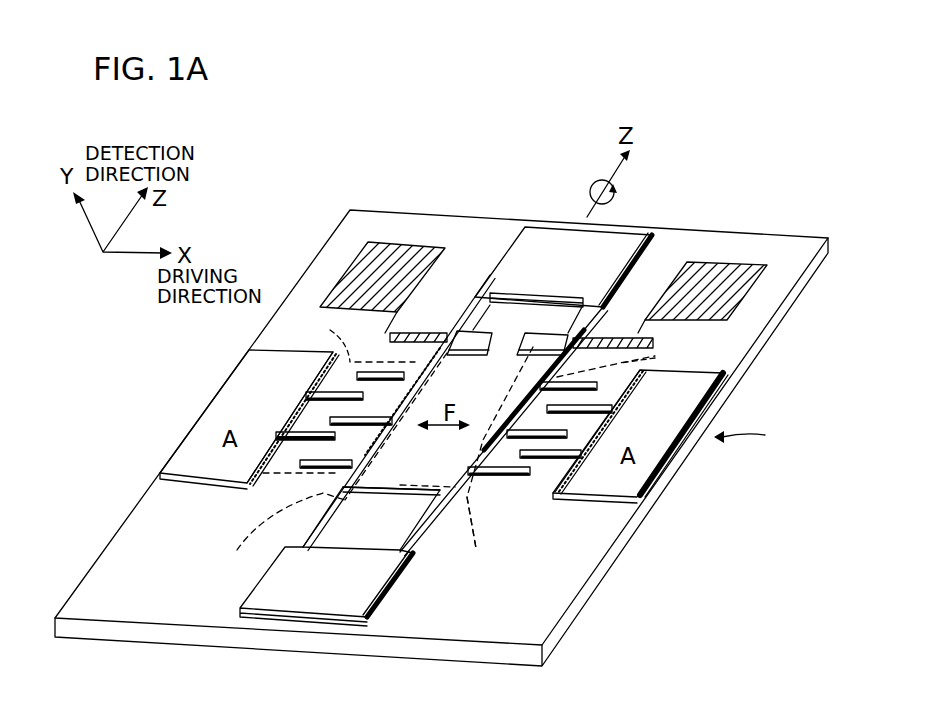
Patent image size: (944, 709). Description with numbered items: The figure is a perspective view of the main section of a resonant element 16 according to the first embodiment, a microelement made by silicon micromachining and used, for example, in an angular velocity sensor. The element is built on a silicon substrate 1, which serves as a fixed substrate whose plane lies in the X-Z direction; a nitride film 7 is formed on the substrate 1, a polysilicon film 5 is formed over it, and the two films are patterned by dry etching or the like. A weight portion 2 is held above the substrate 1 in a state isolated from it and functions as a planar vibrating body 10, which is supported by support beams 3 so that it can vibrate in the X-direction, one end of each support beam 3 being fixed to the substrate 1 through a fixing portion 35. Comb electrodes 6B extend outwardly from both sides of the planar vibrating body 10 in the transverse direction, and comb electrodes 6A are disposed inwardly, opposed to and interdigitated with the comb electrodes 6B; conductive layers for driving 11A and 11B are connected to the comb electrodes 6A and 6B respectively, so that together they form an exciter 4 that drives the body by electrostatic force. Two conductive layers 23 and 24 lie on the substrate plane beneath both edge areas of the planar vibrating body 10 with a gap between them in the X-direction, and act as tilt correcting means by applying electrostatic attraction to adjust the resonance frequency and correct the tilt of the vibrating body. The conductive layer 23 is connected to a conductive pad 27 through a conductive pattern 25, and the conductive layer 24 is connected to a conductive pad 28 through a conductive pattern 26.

The silicon substrate 1 is at (730, 243).
The weight portion 2 is at (487, 380).
The support beams 3 is at (467, 312).
The exciter 4 is at (493, 345).
The polysilicon film 5 is at (652, 235).
The comb electrodes 6A is at (320, 363).
The comb electrodes 6B is at (315, 470).
The nitride film 7 is at (633, 262).
The planar vibrating body 10 is at (400, 485).
The conductive layer for driving 11A is at (300, 392).
The conductive layer for driving 11B is at (410, 358).
The resonant element 16 is at (760, 440).
The conductive layer 23 is at (280, 533).
The conductive layer 24 is at (487, 536).
The conductive pattern 25 is at (483, 288).
The conductive pattern 26 is at (535, 332).
The conductive pad 27 is at (390, 260).
The conductive pad 28 is at (755, 265).
The fixing portion 35 is at (538, 240).